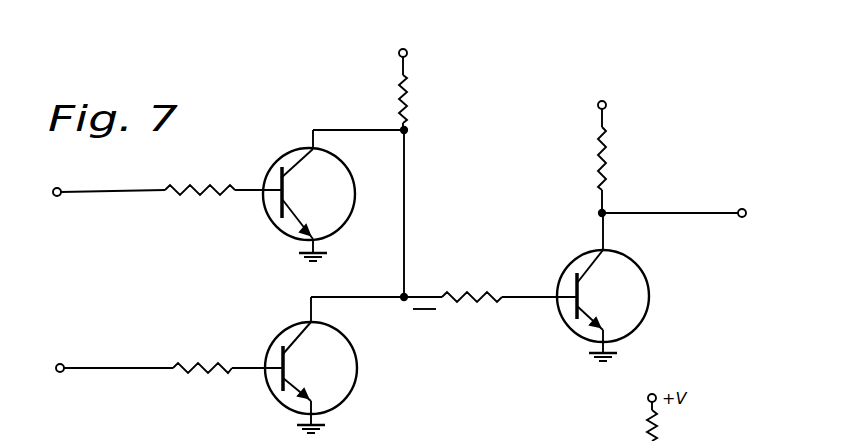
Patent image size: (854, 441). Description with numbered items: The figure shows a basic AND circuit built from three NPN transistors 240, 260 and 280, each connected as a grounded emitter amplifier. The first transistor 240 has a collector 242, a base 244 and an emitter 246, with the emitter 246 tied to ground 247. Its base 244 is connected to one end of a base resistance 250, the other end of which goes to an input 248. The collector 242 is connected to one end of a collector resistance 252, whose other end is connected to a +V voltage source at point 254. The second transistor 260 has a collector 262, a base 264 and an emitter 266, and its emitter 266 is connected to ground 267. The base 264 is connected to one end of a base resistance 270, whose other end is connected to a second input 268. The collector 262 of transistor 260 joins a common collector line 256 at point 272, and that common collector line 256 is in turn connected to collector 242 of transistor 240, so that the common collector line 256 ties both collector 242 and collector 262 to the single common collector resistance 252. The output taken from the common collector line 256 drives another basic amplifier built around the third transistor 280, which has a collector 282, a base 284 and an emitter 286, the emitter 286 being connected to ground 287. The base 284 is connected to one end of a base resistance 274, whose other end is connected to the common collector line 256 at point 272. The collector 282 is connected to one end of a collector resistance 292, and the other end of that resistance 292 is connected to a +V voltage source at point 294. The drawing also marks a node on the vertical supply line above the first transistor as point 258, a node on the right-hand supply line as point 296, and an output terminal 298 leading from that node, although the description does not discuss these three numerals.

The NPN transistor 240 is at (291, 202).
The collector 242 is at (338, 130).
The base 244 is at (247, 194).
The emitter 246 is at (326, 229).
The ground 247 is at (316, 266).
The input 248 is at (66, 178).
The base resistance 250 is at (205, 186).
The collector resistance 252 is at (408, 83).
The point 254 is at (408, 52).
The common collector line 256 is at (408, 206).
The junction 258 is at (408, 126).
The NPN transistor 260 is at (358, 372).
The collector 262 is at (314, 323).
The base 264 is at (248, 351).
The emitter 266 is at (318, 408).
The ground 267 is at (302, 431).
The input 268 is at (67, 355).
The base resistance 270 is at (172, 372).
The point 272 is at (407, 294).
The base resistance 274 is at (470, 291).
The NPN transistor 280 is at (650, 298).
The collector 282 is at (605, 249).
The base 284 is at (537, 300).
The emitter 286 is at (612, 349).
The ground 287 is at (609, 362).
The collector resistance 292 is at (607, 151).
The point 294 is at (607, 105).
The junction 296 is at (605, 210).
The output terminal 298 is at (749, 203).